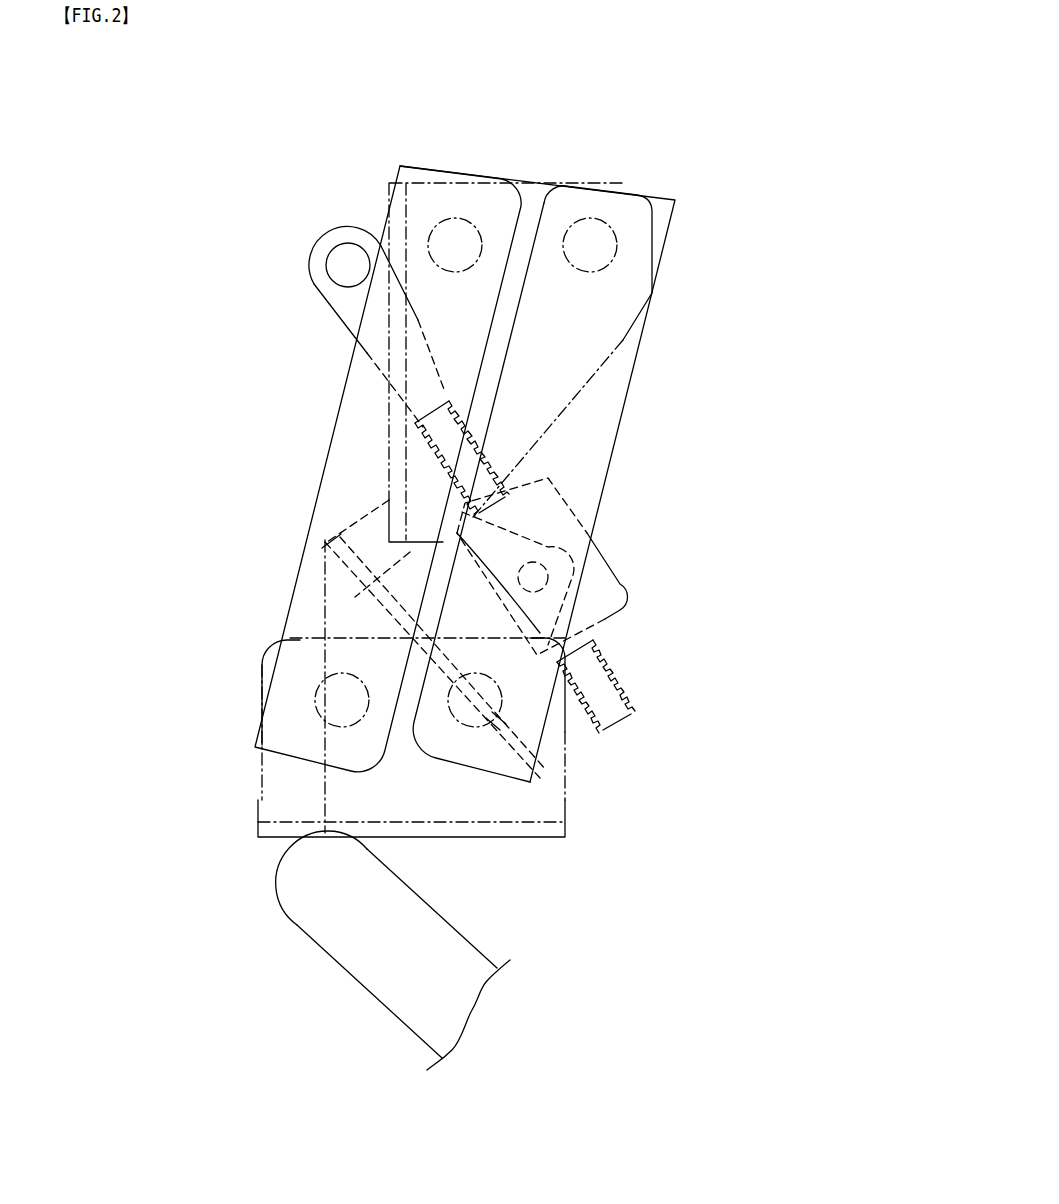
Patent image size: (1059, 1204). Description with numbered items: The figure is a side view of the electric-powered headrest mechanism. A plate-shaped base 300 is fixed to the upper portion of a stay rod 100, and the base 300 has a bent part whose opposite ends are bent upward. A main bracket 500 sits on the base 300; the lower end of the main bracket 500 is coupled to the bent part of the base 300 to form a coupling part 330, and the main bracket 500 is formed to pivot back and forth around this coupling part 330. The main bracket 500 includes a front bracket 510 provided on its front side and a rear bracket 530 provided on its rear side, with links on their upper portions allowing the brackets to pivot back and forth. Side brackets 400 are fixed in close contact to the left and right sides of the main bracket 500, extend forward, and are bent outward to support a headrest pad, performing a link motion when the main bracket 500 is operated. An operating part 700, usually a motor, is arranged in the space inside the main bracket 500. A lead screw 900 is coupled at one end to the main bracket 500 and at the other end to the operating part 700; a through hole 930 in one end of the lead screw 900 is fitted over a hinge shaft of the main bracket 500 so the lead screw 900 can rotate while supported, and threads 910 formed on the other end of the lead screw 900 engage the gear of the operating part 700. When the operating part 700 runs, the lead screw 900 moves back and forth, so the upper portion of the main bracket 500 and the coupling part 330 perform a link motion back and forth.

The stay rod 100 is at (327, 930).
The base 300 is at (565, 800).
The coupling part 330 is at (340, 700).
The side brackets 400 is at (525, 187).
The main bracket 500 is at (668, 331).
The front bracket 510 is at (297, 598).
The rear bracket 530 is at (605, 430).
The operating part 700 is at (641, 582).
The lead screw 900 is at (283, 371).
The threads 910 is at (410, 453).
The through hole 930 is at (330, 287).